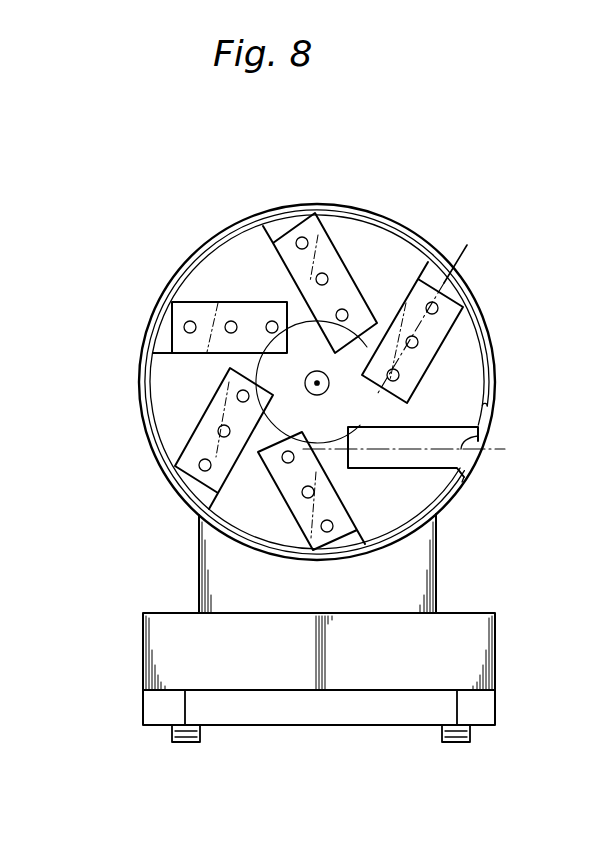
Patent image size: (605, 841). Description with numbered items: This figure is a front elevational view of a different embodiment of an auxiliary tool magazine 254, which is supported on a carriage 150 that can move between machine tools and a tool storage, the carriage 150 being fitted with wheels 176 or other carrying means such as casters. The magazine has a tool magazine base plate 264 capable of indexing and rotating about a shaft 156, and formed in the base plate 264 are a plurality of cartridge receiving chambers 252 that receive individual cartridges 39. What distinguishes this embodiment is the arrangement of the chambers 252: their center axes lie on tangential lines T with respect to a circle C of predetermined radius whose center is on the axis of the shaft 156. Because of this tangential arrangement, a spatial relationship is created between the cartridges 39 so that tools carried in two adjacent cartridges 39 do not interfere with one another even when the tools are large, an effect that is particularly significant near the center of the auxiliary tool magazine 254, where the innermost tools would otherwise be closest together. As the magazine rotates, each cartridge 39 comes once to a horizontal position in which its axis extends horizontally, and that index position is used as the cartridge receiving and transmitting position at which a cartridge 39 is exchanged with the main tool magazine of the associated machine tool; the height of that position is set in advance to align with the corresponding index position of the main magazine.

The cartridge 39 is at (196, 300).
The carriage 150 is at (160, 659).
The shaft 156 is at (328, 390).
The wheels 176 is at (190, 745).
The cartridge receiving chamber 252 is at (436, 462).
The auxiliary tool magazine 254 is at (131, 376).
The tool magazine base plate 264 is at (435, 485).
The circle C is at (378, 330).
The tangential line T is at (449, 238).